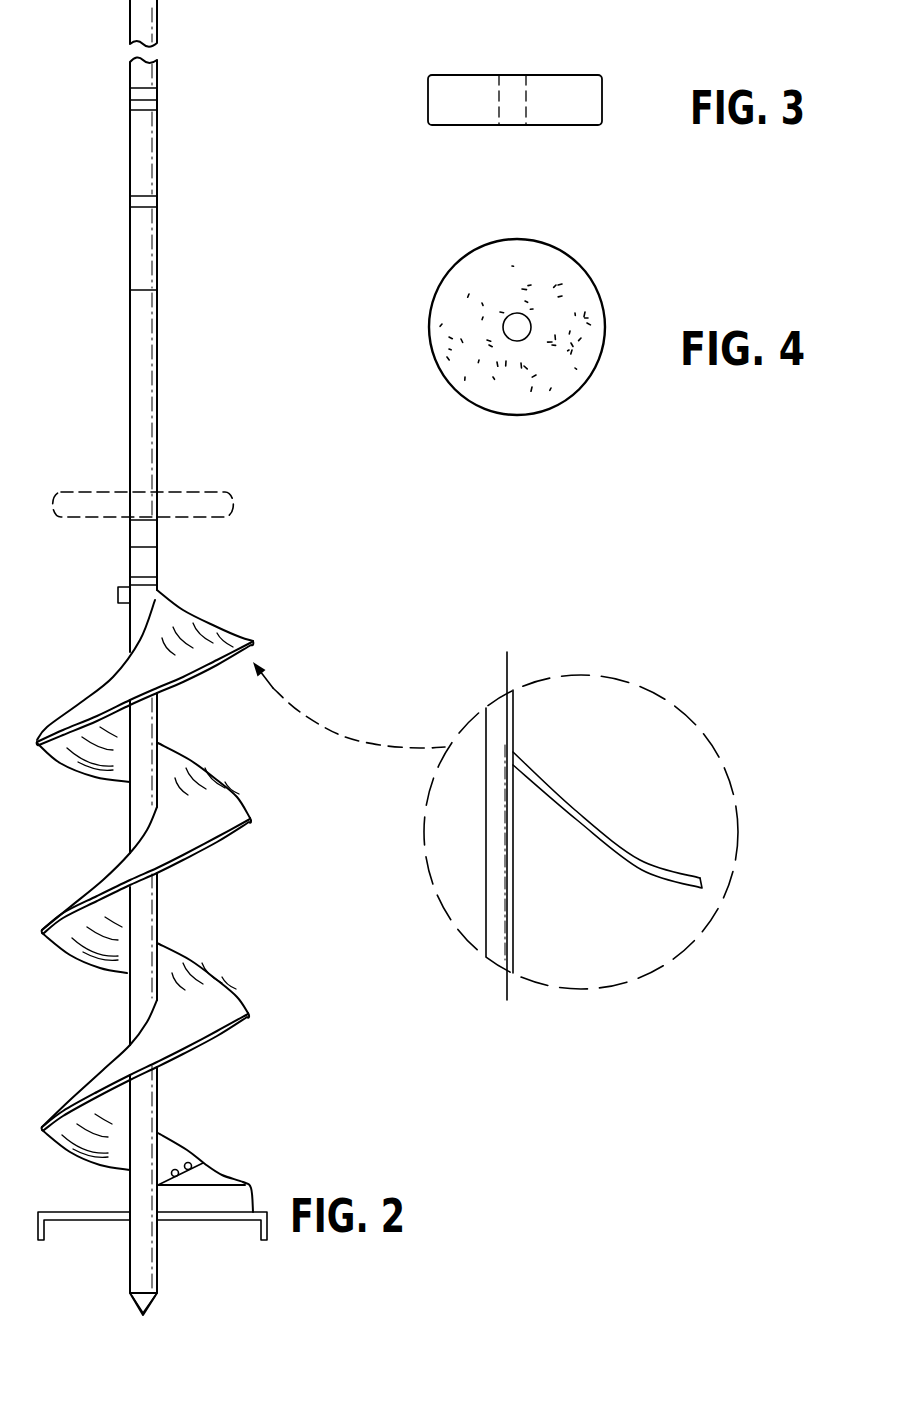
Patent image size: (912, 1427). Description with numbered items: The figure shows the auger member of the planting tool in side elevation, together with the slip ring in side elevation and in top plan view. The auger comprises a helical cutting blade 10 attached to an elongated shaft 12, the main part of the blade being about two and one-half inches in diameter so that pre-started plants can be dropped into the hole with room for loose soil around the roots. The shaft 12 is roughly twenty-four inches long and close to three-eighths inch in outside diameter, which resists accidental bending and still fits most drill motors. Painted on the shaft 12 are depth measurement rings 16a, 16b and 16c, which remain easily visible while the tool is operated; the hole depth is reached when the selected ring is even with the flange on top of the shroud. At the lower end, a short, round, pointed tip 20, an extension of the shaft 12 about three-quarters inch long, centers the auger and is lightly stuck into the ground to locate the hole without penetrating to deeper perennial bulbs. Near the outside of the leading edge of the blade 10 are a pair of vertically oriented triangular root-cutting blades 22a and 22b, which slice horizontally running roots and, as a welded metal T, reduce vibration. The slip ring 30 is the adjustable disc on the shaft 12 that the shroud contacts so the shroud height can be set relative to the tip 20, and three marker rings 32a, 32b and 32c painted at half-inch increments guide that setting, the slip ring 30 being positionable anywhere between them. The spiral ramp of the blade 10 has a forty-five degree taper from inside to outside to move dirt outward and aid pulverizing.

In FIG. 2, the helical cutting blade 10 is at (233, 797).
In FIG. 2, the elongated shaft 12 is at (157, 745).
In FIG. 2, the depth measurement ring 16a is at (157, 290).
In FIG. 2, the depth measurement ring 16b is at (156, 206).
In FIG. 2, the depth measurement ring 16c is at (156, 109).
In FIG. 2, the pointed tip 20 is at (160, 1288).
In FIG. 2, the triangular blade 22a is at (47, 1242).
In FIG. 2, the triangular blade 22b is at (258, 1242).
In FIG. 2, the slip ring 30 is at (190, 520).
In FIG. 3, the slip ring 30 is at (602, 105).
In FIG. 4, the slip ring 30 is at (588, 308).
In FIG. 2, the marker ring 32a is at (120, 585).
In FIG. 2, the marker ring 32b is at (157, 549).
In FIG. 2, the marker ring 32c is at (130, 524).